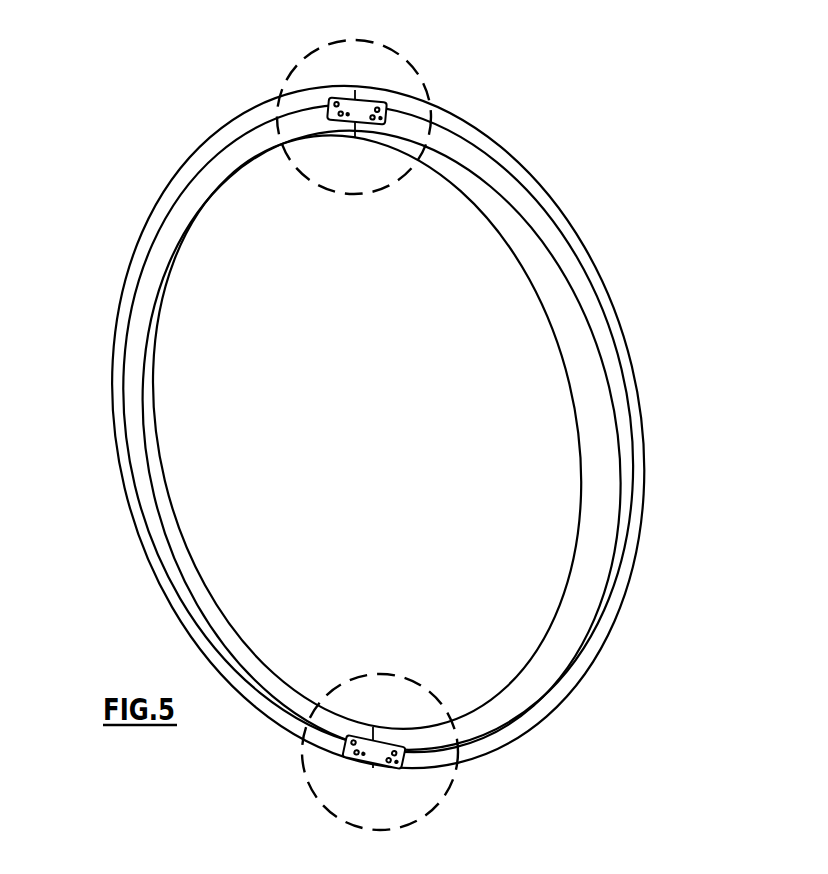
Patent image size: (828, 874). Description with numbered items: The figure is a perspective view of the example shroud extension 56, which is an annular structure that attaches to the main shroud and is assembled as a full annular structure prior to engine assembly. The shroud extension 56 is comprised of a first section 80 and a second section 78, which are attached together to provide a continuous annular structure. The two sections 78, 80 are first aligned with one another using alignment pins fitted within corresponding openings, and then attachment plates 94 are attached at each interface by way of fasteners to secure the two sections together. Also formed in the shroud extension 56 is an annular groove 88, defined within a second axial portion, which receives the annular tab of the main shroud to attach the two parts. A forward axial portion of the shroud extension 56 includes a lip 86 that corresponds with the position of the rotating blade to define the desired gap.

The shroud extension 56 is at (586, 96).
The second section 78 is at (607, 322).
The first section 80 is at (120, 477).
The lip 86 is at (561, 206).
The annular groove 88 is at (570, 278).
The attachment plate 94 is at (383, 192).